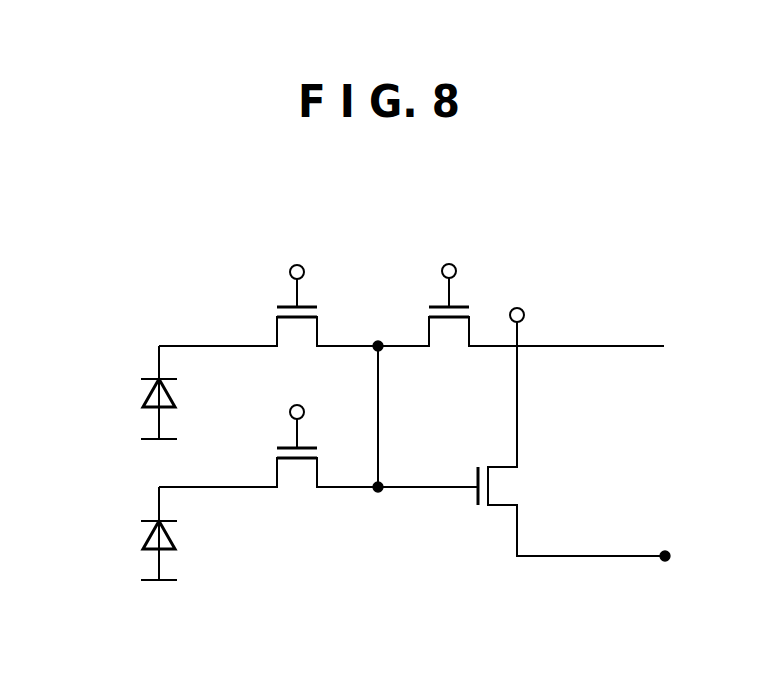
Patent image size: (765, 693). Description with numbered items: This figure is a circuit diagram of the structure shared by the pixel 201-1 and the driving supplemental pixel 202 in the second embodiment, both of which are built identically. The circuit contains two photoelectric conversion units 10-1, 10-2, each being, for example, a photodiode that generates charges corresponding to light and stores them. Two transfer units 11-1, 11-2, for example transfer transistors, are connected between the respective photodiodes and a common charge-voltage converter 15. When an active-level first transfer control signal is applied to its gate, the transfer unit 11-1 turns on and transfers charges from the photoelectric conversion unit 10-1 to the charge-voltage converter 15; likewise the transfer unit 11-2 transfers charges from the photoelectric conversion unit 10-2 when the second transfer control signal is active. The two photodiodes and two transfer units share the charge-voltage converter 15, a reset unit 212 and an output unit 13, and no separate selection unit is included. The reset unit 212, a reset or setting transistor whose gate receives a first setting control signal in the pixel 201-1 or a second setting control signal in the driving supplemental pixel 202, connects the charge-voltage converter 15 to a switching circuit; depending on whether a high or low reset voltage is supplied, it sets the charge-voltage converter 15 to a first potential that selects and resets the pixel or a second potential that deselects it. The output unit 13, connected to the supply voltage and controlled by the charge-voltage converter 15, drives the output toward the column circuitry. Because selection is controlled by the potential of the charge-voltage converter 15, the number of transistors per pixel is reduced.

The photoelectric conversion unit 10-1 is at (147, 373).
The photoelectric conversion unit 10-2 is at (147, 515).
The transfer unit 11-1 is at (284, 304).
The transfer unit 11-2 is at (284, 445).
The reset unit 212 is at (440, 303).
The output unit 13 is at (484, 462).
The charge-voltage converter 15 is at (375, 497).
The pixel 201-1 is at (382, 436).
The driving supplemental pixel 202 is at (403, 436).